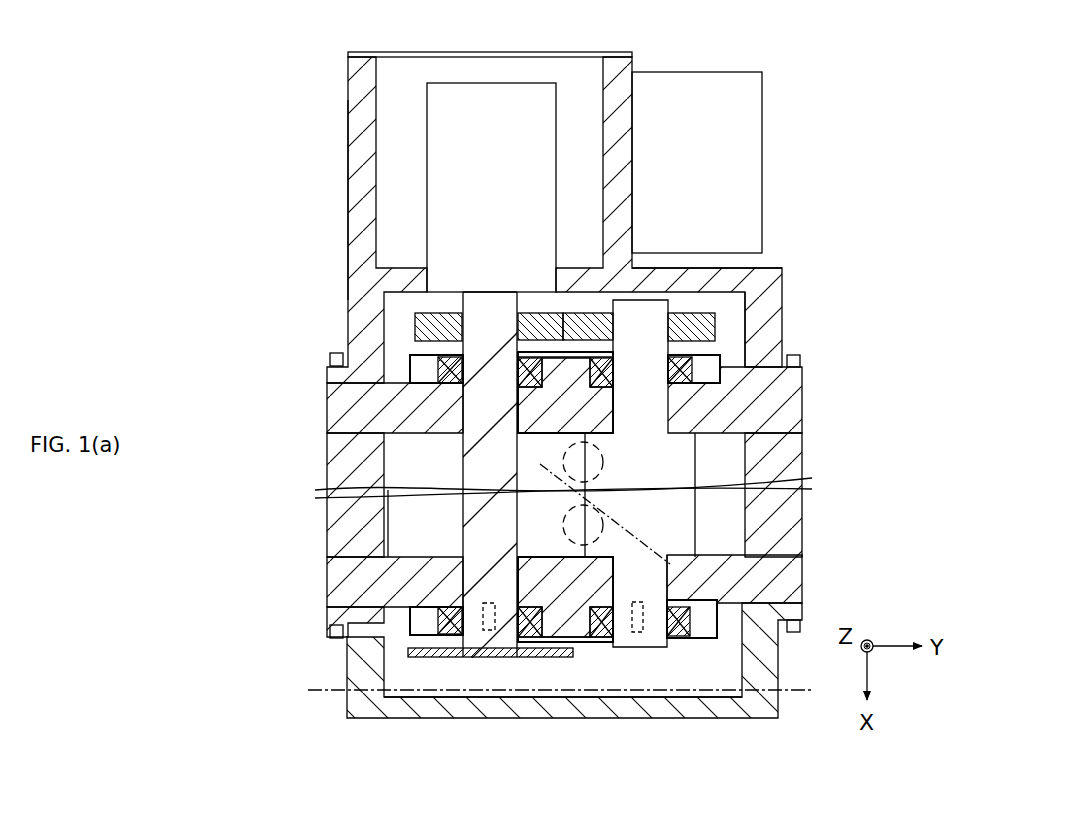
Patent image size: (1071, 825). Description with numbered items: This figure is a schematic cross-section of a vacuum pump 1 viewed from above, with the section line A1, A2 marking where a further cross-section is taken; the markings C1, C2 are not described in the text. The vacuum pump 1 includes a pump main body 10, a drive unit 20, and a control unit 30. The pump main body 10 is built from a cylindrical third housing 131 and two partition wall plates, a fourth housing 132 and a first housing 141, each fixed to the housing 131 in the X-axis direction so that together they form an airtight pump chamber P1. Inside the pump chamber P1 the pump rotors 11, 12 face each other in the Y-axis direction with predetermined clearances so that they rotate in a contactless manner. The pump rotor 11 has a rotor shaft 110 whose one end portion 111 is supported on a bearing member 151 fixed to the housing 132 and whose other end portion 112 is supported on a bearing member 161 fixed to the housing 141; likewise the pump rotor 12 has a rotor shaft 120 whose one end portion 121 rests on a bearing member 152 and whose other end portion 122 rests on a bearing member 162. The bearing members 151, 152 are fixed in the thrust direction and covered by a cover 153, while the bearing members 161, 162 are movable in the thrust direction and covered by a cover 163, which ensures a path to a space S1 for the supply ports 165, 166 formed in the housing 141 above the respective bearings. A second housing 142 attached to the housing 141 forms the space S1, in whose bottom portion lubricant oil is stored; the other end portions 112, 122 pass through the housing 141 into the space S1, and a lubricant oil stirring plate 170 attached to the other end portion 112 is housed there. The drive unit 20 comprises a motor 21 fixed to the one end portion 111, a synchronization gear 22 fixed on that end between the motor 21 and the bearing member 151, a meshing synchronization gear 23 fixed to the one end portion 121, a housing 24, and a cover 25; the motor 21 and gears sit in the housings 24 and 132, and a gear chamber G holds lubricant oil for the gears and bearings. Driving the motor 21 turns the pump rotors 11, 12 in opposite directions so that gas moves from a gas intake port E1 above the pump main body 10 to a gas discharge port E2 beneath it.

The vacuum pump 1 is at (837, 117).
The pump main body 10 is at (327, 520).
The pump rotor 11 is at (460, 456).
The pump rotor 12 is at (662, 468).
The drive unit 20 is at (515, 196).
The motor 21 is at (450, 165).
The synchronization gear 22 is at (400, 326).
The synchronization gear 23 is at (755, 330).
The housing 24 is at (350, 247).
The cover 25 is at (633, 53).
The control unit 30 is at (710, 142).
The rotor shaft 110 is at (510, 709).
The one end portion 111 is at (460, 296).
The other end portion 112 is at (490, 640).
The rotor shaft 120 is at (760, 578).
The one end portion 121 is at (687, 263).
The other end portion 122 is at (640, 640).
The third housing 131 is at (352, 540).
The fourth housing 132 is at (345, 408).
The first housing 141 is at (430, 600).
The second housing 142 is at (460, 714).
The bearing member 151 is at (445, 365).
The bearing member 152 is at (705, 378).
The cover 153 is at (748, 300).
The bearing member 161 is at (445, 626).
The bearing member 162 is at (690, 640).
The cover 163 is at (600, 645).
The supply port 165 is at (410, 665).
The supply port 166 is at (670, 650).
The lubricant oil stirring plate 170 is at (565, 658).
The gear chamber G is at (740, 303).
The gas intake port E1 is at (583, 462).
The gas discharge port E2 is at (600, 527).
The pump chamber P1 is at (750, 503).
The space S1 is at (725, 666).
The center line 1 C1 is at (488, 690).
The center line 2 C2 is at (486, 678).
The line A1-A2 A1 is at (327, 700).
The line A1- A2 is at (805, 700).